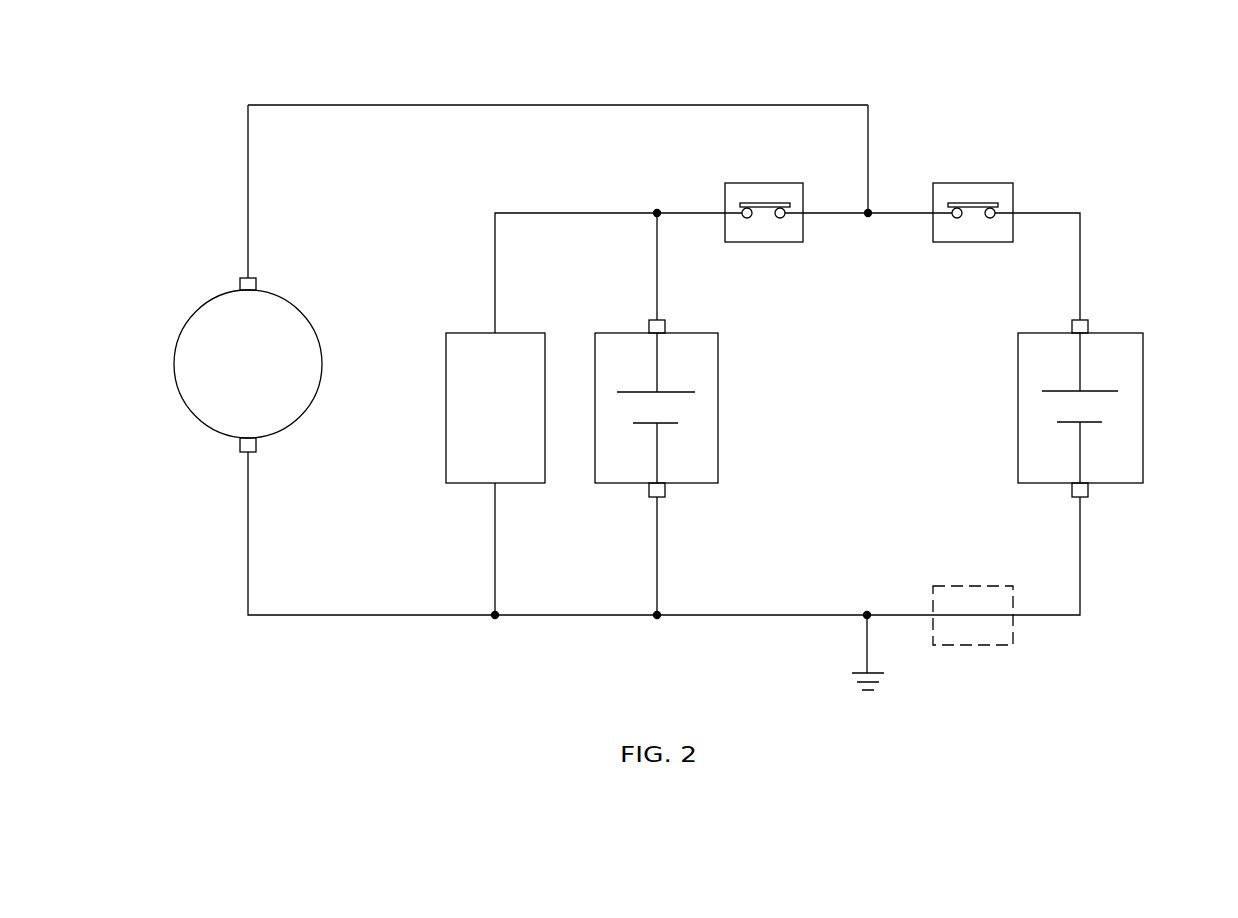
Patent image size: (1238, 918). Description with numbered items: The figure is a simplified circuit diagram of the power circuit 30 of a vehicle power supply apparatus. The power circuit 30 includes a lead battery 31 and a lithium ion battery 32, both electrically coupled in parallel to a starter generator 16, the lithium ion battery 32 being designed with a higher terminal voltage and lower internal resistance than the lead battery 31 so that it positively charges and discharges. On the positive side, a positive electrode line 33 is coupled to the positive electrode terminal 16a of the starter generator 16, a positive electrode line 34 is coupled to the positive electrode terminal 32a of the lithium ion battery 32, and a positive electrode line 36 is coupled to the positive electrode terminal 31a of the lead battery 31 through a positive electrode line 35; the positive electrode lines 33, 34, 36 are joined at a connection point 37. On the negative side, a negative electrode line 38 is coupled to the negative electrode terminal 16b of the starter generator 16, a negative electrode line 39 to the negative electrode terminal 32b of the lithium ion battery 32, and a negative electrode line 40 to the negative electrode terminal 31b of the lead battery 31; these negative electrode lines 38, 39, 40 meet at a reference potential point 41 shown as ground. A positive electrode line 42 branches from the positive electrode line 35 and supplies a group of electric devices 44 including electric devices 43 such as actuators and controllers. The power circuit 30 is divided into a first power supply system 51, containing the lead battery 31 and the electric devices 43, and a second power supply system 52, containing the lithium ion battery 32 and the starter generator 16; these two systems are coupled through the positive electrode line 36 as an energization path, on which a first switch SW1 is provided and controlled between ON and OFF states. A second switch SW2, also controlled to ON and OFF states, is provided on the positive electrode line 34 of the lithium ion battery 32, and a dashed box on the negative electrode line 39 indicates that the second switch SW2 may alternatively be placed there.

The power circuit 30 is at (178, 76).
The starter generator 16 is at (320, 342).
The positive electrode terminal 16a is at (243, 278).
The negative electrode terminal 16b is at (245, 453).
The lead battery 31 is at (718, 407).
The positive electrode terminal 31a is at (650, 321).
The negative electrode terminal 31b is at (648, 496).
The lithium ion battery 32 is at (1143, 407).
The positive electrode terminal 32a is at (1088, 324).
The negative electrode terminal 32b is at (1088, 494).
The positive electrode line 33 is at (515, 104).
The positive electrode line 34 is at (900, 213).
The positive electrode line 35 is at (657, 278).
The positive electrode line 36 is at (688, 213).
The connection point 37 is at (868, 218).
The negative electrode line 38 is at (248, 573).
The negative electrode line 39 is at (1037, 614).
The negative electrode line 40 is at (657, 553).
The reference potential point 41 is at (862, 618).
The positive electrode line 42 is at (562, 213).
The electric devices 43 is at (446, 388).
The group of electric devices 44 is at (436, 452).
The first power supply system 51 is at (443, 266).
The second power supply system 52 is at (1130, 246).
The first switch SW1 is at (762, 243).
The second switch SW2 is at (964, 243).